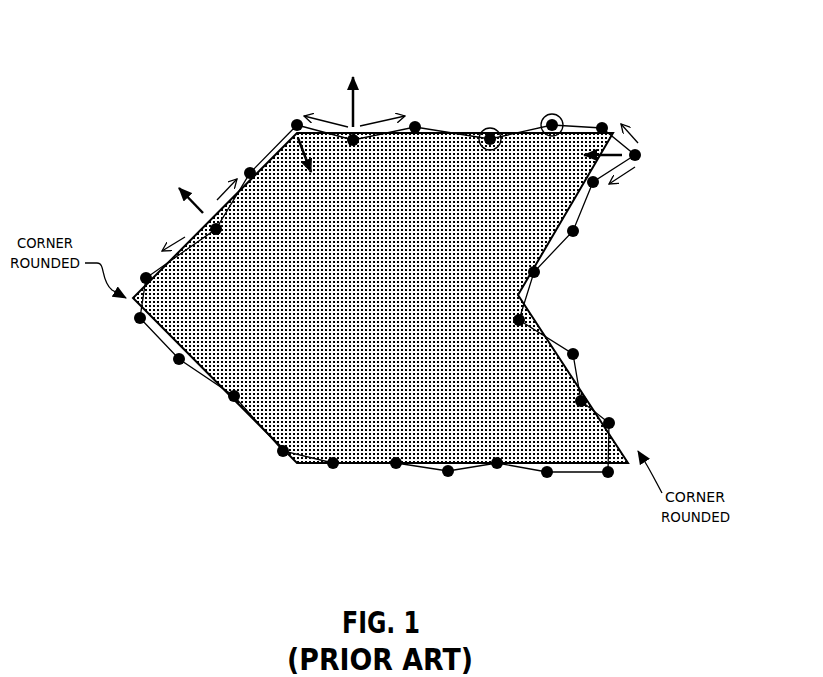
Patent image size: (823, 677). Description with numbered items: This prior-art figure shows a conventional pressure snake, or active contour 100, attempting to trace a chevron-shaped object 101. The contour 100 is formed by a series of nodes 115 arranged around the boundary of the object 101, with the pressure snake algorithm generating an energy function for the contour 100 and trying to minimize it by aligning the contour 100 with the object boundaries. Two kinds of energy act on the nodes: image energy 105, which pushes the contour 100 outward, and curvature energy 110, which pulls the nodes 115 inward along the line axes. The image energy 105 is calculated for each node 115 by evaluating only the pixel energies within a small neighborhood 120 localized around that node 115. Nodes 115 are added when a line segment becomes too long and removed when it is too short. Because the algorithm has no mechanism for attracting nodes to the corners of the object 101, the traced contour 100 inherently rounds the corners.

The contour 100 is at (157, 338).
The object 101 is at (430, 308).
The image energy 105 is at (352, 72).
The curvature energy 110 is at (390, 118).
The node 115 is at (296, 125).
The neighborhood 120 is at (498, 128).